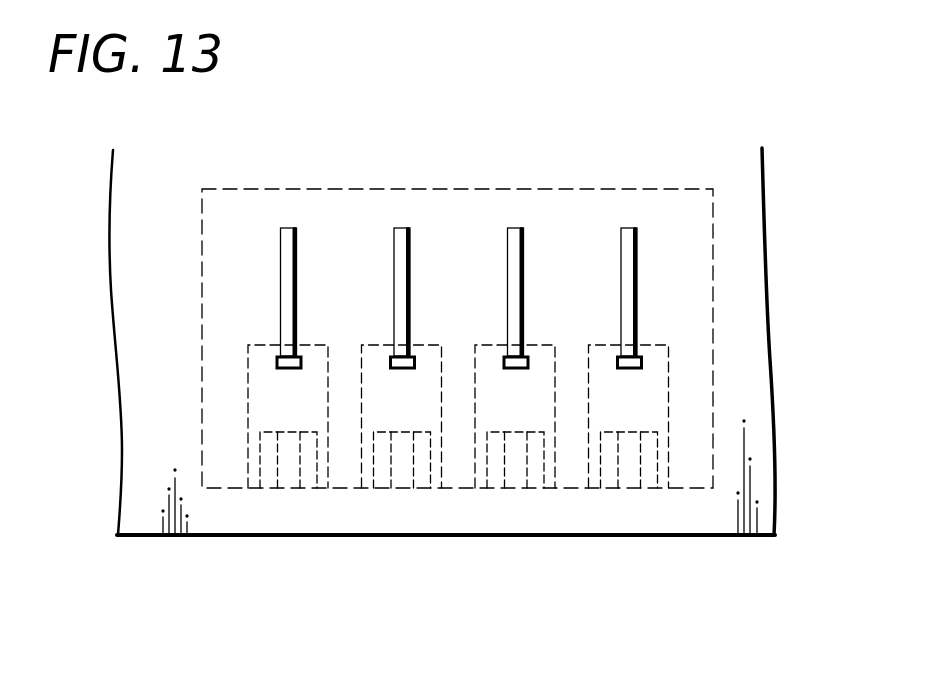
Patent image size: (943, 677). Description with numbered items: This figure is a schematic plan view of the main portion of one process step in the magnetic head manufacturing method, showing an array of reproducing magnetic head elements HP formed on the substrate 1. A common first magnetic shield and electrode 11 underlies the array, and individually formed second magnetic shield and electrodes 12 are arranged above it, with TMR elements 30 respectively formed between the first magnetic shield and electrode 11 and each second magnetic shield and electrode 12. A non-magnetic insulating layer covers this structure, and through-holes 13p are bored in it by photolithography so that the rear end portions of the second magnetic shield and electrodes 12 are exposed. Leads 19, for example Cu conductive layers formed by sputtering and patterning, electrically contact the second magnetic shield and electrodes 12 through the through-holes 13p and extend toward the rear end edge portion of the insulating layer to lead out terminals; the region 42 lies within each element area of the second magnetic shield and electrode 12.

The substrate / base 1 is at (715, 507).
The first magnetic shield and electrode 11 is at (570, 488).
The second magnetic shield and electrode 12 is at (600, 343).
The through-hole 13p is at (298, 355).
The lead 19 is at (291, 240).
The TMR element 30 is at (290, 478).
The protective layer region 42 is at (645, 397).
The reproducing magnetic head element HP is at (317, 472).